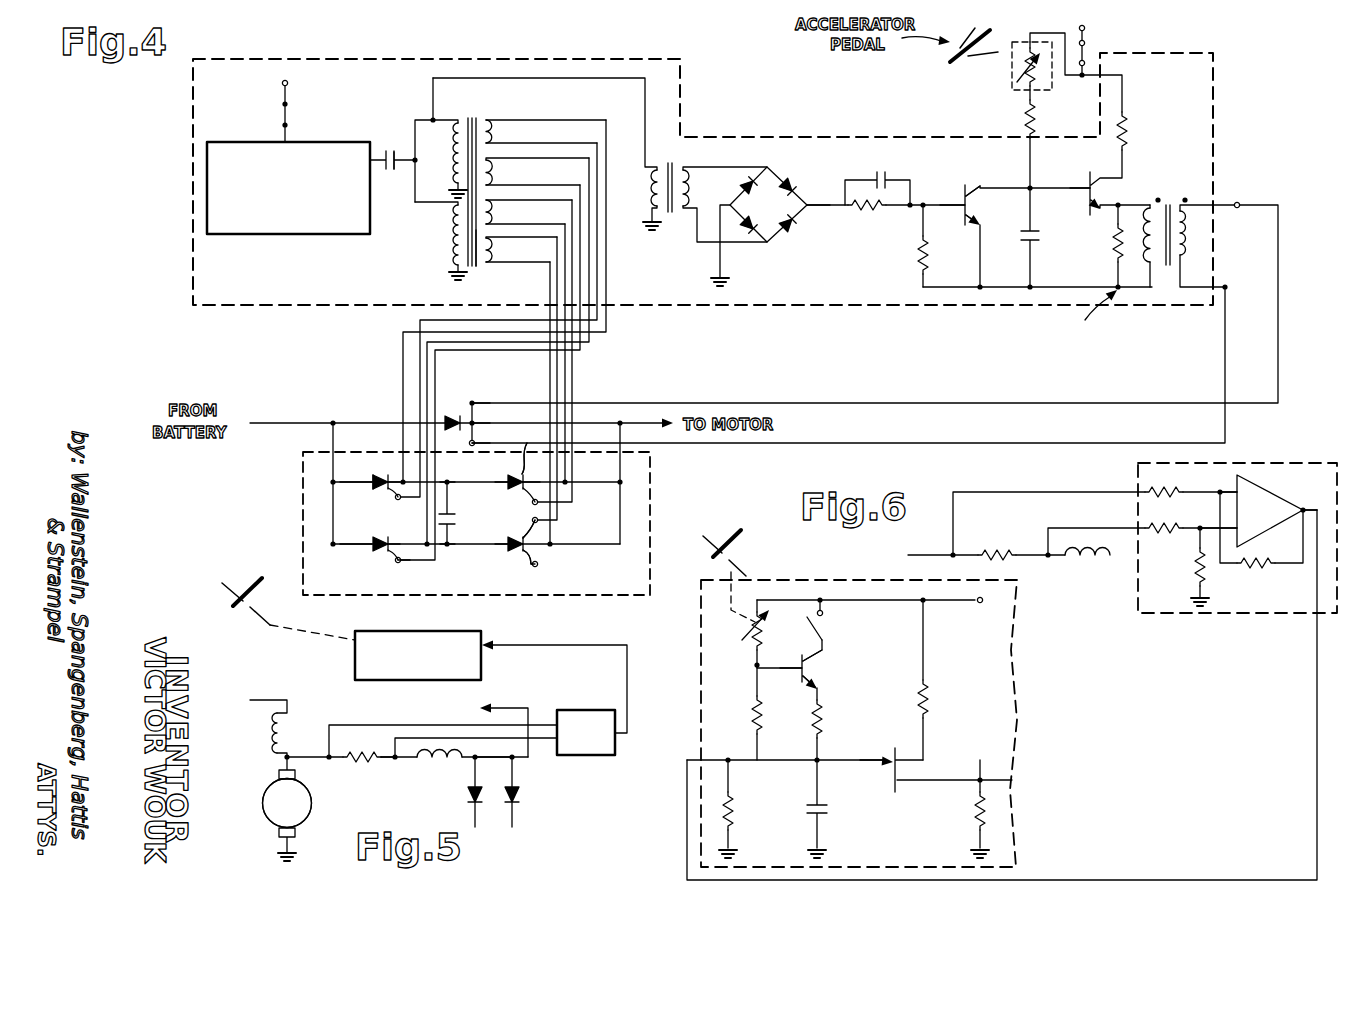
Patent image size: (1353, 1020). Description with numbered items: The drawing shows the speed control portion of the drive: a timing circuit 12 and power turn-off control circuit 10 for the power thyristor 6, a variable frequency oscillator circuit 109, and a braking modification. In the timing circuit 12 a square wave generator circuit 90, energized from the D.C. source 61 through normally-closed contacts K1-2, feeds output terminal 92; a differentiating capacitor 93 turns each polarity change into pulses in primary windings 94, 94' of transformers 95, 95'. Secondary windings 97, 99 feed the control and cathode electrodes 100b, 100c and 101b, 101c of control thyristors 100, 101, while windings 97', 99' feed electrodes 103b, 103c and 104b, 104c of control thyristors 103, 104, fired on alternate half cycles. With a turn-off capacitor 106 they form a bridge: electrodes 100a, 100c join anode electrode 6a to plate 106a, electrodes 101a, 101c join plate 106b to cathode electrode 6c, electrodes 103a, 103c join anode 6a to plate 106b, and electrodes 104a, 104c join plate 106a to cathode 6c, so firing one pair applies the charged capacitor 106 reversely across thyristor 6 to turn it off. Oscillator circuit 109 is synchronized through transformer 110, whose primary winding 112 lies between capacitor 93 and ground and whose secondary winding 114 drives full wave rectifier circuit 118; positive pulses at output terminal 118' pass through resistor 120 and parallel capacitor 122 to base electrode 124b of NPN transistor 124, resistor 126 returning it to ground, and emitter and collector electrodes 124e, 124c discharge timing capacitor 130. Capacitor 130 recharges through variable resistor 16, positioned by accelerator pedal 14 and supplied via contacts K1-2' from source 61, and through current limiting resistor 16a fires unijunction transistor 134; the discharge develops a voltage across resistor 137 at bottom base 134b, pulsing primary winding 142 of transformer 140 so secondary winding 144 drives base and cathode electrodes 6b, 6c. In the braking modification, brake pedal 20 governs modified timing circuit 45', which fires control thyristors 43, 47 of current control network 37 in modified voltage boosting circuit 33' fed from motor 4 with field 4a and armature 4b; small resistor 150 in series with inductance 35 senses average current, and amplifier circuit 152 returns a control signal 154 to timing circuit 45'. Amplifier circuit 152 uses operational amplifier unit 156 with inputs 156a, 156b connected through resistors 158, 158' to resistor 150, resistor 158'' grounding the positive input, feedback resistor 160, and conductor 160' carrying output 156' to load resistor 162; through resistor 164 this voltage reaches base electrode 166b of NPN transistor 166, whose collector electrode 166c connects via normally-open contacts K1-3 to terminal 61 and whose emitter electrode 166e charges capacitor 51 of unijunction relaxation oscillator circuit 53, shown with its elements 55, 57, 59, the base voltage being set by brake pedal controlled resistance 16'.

In FIG. 4, the timing circuit 12 is at (186, 115).
In FIG. 4, the square wave generator circuit 90 is at (245, 142).
In FIG. 4, the source of D.C. voltage 61 is at (288, 84).
In FIG. 6, the source of D.C. voltage 61 is at (985, 600).
In FIG. 4, the normally-closed contacts of relay K1 K1-2 is at (311, 107).
In FIG. 4, the normally-closed contacts of relay K1 K1-2' is at (1127, 48).
In FIG. 4, the output terminal 92 is at (390, 151).
In FIG. 4, the differentiating capacitor 93 is at (394, 170).
In FIG. 4, the primary winding 94 is at (439, 161).
In FIG. 4, the primary winding 94' is at (436, 241).
In FIG. 4, the transformer 95 is at (455, 172).
In FIG. 4, the transformer 95' is at (492, 262).
In FIG. 4, the secondary winding 97 is at (546, 117).
In FIG. 4, the secondary winding 99 is at (537, 171).
In FIG. 4, the secondary winding 97' is at (529, 213).
In FIG. 4, the secondary winding 99' is at (521, 249).
In FIG. 4, the power thyristor 6 is at (453, 410).
In FIG. 4, the anode electrode 6a is at (466, 440).
In FIG. 4, the base electrode 6b is at (460, 411).
In FIG. 4, the cathode electrode 6c is at (464, 424).
In FIG. 4, the power turn-off control circuit 10 is at (288, 482).
In FIG. 4, the control thyristor 100 is at (368, 467).
In FIG. 4, the anode electrode 100a is at (370, 482).
In FIG. 4, the control electrode 100b is at (373, 472).
In FIG. 4, the cathode electrode 100c is at (394, 493).
In FIG. 4, the control thyristor 103 is at (362, 563).
In FIG. 4, the anode electrode 103a is at (372, 543).
In FIG. 4, the control electrode 103b is at (435, 560).
In FIG. 4, the cathode electrode 103c is at (392, 558).
In FIG. 4, the control thyristor 104 is at (511, 481).
In FIG. 4, the anode electrode 104a is at (506, 488).
In FIG. 4, the control electrode 104b is at (515, 451).
In FIG. 4, the cathode electrode 104c is at (530, 488).
In FIG. 4, the control thyristor 101 is at (505, 558).
In FIG. 4, the anode electrode 101a is at (524, 523).
In FIG. 4, the control electrode 101b is at (524, 537).
In FIG. 4, the cathode electrode 101c is at (533, 567).
In FIG. 4, the turn-off capacitor 106 is at (462, 535).
In FIG. 4, the plate 106a is at (454, 473).
In FIG. 4, the plate 106b is at (461, 559).
In FIG. 4, the transformer 110 is at (669, 159).
In FIG. 4, the primary winding 112 is at (651, 216).
In FIG. 4, the secondary winding 114 is at (692, 180).
In FIG. 4, the full wave rectifier circuit 118 is at (779, 226).
In FIG. 4, the output terminal 118' is at (823, 181).
In FIG. 4, the resistor 120 is at (868, 212).
In FIG. 4, the capacitor 122 is at (883, 176).
In FIG. 4, the NPN transistor 124 is at (963, 180).
In FIG. 4, the base electrode 124b is at (961, 200).
In FIG. 4, the collector electrode 124c is at (975, 185).
In FIG. 4, the emitter electrode 124e is at (953, 233).
In FIG. 4, the resistor 126 is at (914, 259).
In FIG. 4, the accelerator pedal 14 is at (962, 44).
In FIG. 4, the variable impedance 16 is at (1039, 72).
In FIG. 4, the current limiting resistor 16a is at (1034, 128).
In FIG. 4, the unijunction transistor 134 is at (1080, 177).
In FIG. 4, the bottom base 134b is at (1098, 218).
In FIG. 4, the capacitor 130 is at (1038, 240).
In FIG. 4, the resistor 137 is at (1110, 256).
In FIG. 4, the primary winding 142 is at (1153, 233).
In FIG. 4, the secondary winding 144 is at (1188, 229).
In FIG. 4, the transformer 140 is at (1168, 278).
In FIG. 4, the variable frequency oscillator circuit 109 is at (1044, 332).
In FIG. 5, the brake pedal 20 is at (276, 606).
In FIG. 6, the brake pedal 20 is at (725, 564).
In FIG. 5, the modified timing circuit 45' is at (384, 655).
In FIG. 6, the modified timing circuit 45' is at (859, 705).
In FIG. 5, the connection from amplifier to timing circuit 154 is at (624, 665).
In FIG. 5, the amplifier circuit 152 is at (602, 708).
In FIG. 6, the amplifier circuit 152 is at (1137, 472).
In FIG. 5, the motor 4 is at (259, 768).
In FIG. 5, the motor field winding 4a is at (270, 731).
In FIG. 5, the motor armature 4b is at (263, 813).
In FIG. 5, the resistor 150 is at (360, 739).
In FIG. 6, the resistor 150 is at (1010, 546).
In FIG. 5, the modified voltage boosting circuit 33' is at (380, 775).
In FIG. 5, the inductance 35 is at (465, 786).
In FIG. 6, the inductance 35 is at (1087, 571).
In FIG. 5, the current control network 37 is at (493, 769).
In FIG. 5, the control thyristor 43 is at (426, 762).
In FIG. 5, the control thyristor 47 is at (522, 790).
In FIG. 6, the normally-open contacts of relay K1 K1-3 is at (826, 619).
In FIG. 6, the potentiometer 16' is at (739, 648).
In FIG. 6, the resistor 164 is at (750, 727).
In FIG. 6, the load resistor 162 is at (734, 813).
In FIG. 6, the NPN transistor 166 is at (820, 664).
In FIG. 6, the base electrode 166b is at (802, 670).
In FIG. 6, the collector electrode 166c is at (818, 656).
In FIG. 6, the emitter electrode 166e is at (821, 685).
In FIG. 6, the charging capacitor 51 is at (824, 811).
In FIG. 6, the unijunction relaxation oscillator circuit 53 is at (891, 736).
In FIG. 6, the emitter of unijunction transistor 55 is at (880, 755).
In FIG. 6, the resistor 57 is at (933, 698).
In FIG. 6, the resistor 59 is at (974, 816).
In FIG. 6, the conductor 160' is at (1002, 695).
In FIG. 6, the resistor 158 is at (1095, 511).
In FIG. 6, the resistor 158' is at (1142, 528).
In FIG. 6, the resistor 158'' is at (1177, 567).
In FIG. 6, the integrated operational amplifier unit 156 is at (1279, 507).
In FIG. 6, the negative input terminal 156a is at (1232, 490).
In FIG. 6, the positive input terminal 156b is at (1200, 532).
In FIG. 6, the amplifier output 156' is at (1327, 472).
In FIG. 6, the resistor 160 is at (1261, 548).